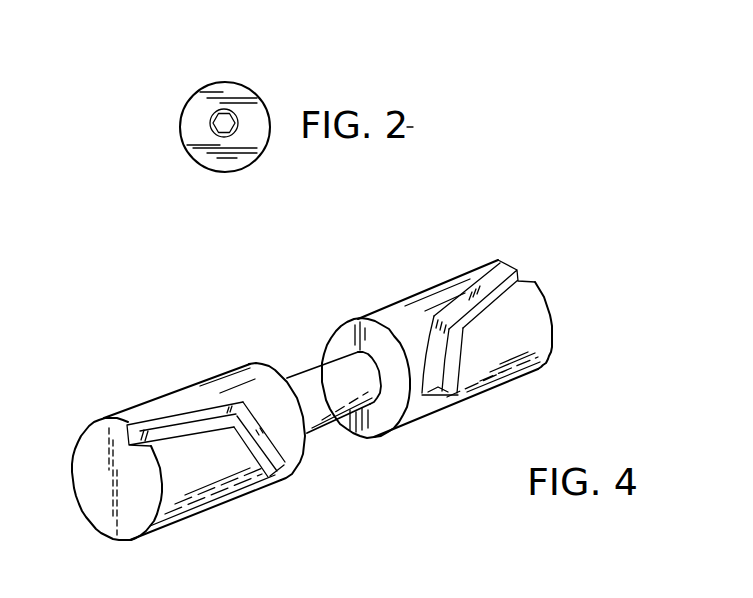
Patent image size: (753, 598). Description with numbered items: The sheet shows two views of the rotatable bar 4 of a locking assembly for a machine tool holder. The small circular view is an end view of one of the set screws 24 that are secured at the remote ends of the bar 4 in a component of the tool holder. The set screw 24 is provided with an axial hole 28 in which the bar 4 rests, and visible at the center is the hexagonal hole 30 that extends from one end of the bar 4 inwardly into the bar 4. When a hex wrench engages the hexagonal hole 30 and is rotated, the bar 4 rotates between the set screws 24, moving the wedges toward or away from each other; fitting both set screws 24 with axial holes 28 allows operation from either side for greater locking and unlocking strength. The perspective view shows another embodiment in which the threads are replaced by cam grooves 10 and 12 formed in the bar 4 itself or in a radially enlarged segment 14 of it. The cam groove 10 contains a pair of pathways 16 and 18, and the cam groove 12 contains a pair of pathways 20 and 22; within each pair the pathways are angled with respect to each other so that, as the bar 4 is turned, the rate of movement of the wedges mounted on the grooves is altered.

In FIG. 4, the bar 4 is at (308, 383).
In FIG. 4, the cam groove 10 is at (488, 275).
In FIG. 4, the cam groove 12 is at (165, 423).
In FIG. 4, the radially enlarged segment 14 is at (515, 359).
In FIG. 4, the pathway 16 is at (518, 277).
In FIG. 4, the pathway 18 is at (452, 398).
In FIG. 4, the pathway 20 is at (95, 431).
In FIG. 4, the pathway 22 is at (268, 472).
In FIG. 2, the set screw 24 is at (181, 127).
In FIG. 2, the axial hole 28 is at (236, 110).
In FIG. 2, the hexagonal hole 30 is at (220, 130).